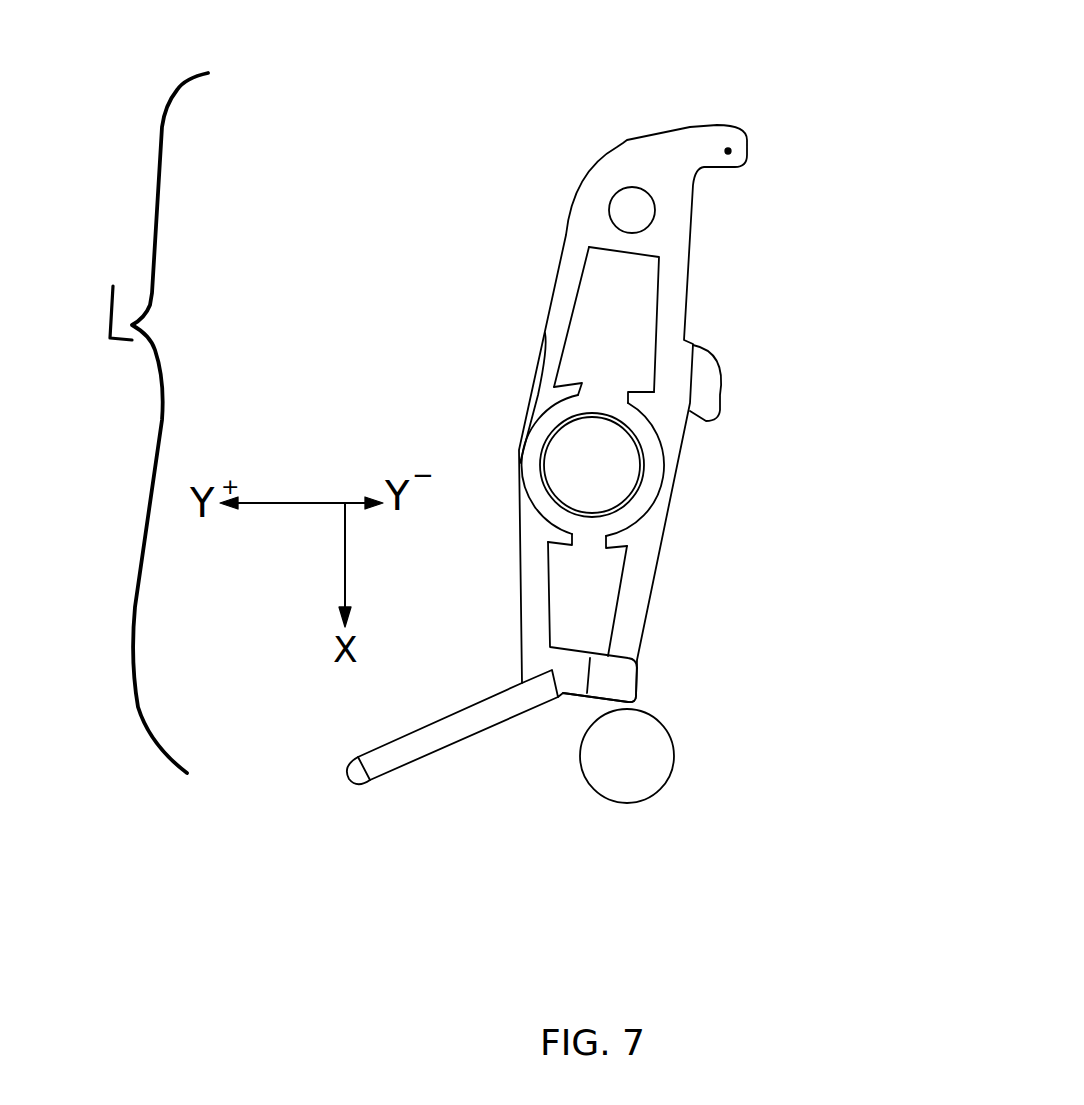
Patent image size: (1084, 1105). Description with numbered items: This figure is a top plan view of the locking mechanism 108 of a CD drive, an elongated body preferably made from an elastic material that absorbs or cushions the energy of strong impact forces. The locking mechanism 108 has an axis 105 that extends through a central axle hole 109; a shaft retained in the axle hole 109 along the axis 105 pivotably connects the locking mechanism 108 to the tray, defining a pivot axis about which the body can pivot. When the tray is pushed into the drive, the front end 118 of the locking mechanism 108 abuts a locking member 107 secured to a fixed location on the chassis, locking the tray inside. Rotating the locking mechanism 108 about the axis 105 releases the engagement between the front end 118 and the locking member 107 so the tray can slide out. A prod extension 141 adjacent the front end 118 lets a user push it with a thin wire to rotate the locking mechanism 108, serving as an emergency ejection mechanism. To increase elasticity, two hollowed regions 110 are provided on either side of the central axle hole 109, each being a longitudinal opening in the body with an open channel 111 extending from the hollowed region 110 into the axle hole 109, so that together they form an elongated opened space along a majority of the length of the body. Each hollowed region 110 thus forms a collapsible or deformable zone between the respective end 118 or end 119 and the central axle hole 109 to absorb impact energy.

The end 119 is at (656, 153).
The locking mechanism 108 is at (723, 151).
The hollowed region 110 is at (610, 337).
The open channel 111 is at (597, 391).
The axis 105 is at (628, 418).
The central axle hole 109 is at (628, 510).
The front end 118 is at (630, 685).
The prod extension 141 is at (433, 738).
The locking member 107 is at (670, 780).